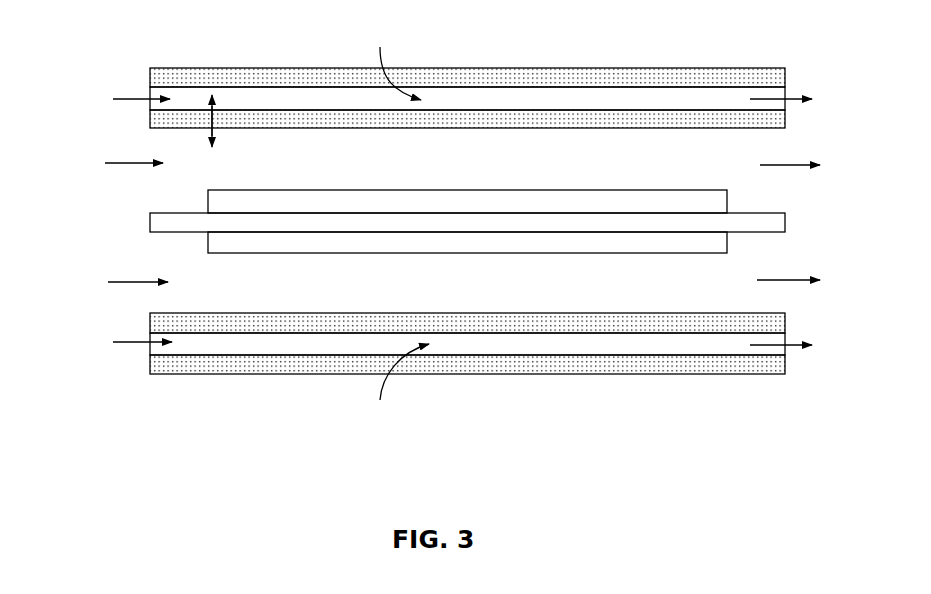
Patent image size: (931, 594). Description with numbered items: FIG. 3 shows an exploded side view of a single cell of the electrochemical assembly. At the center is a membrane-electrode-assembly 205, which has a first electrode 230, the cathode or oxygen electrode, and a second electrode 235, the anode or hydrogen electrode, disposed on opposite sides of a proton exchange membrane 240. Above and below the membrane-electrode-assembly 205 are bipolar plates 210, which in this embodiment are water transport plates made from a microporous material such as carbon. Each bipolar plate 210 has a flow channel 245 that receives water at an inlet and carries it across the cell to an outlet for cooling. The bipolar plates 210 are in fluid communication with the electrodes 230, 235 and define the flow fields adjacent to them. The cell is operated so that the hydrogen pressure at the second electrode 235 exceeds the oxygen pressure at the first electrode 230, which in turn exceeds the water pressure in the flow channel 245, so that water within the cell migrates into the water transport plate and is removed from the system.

The membrane-electrode-assembly 205 is at (78, 222).
The bipolar plate 210 is at (243, 67).
The first electrode 230 is at (587, 190).
The second electrode 235 is at (632, 254).
The proton exchange membrane 240 is at (195, 233).
The flow channel 245 is at (597, 90).